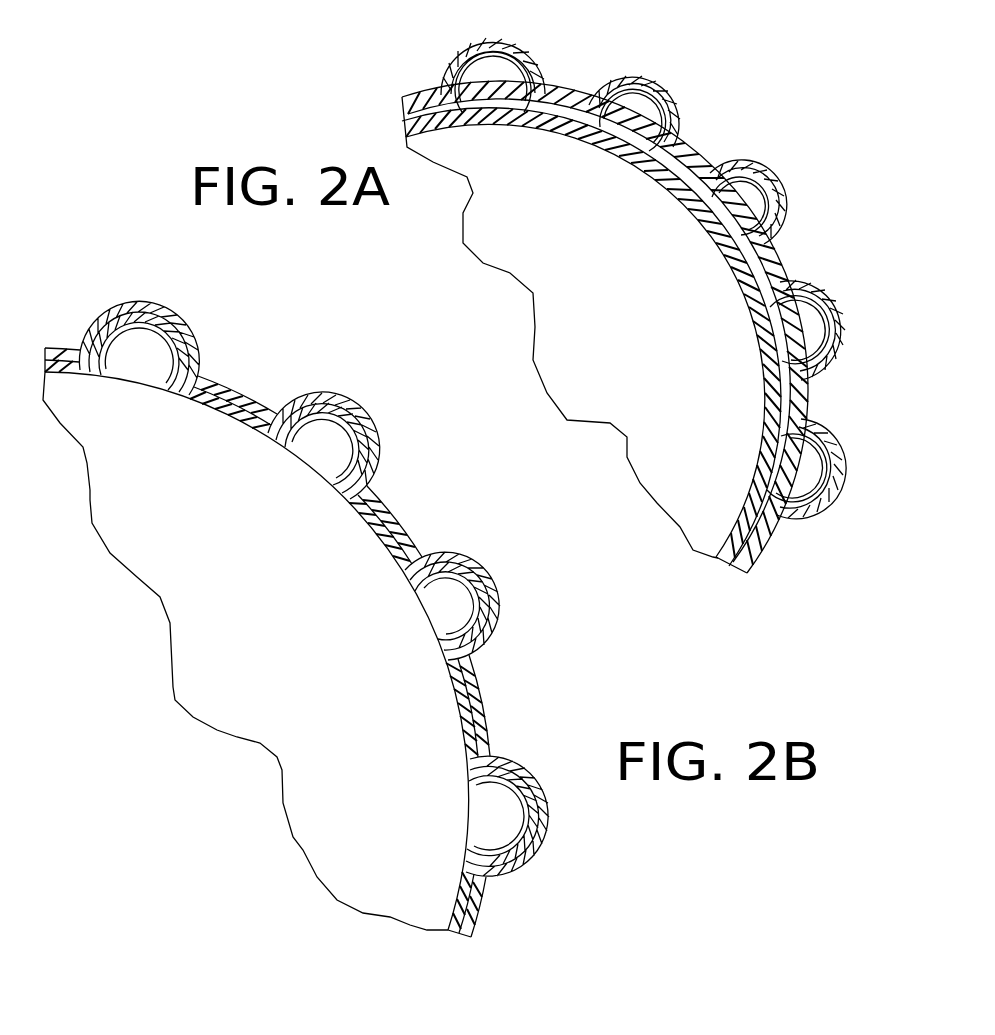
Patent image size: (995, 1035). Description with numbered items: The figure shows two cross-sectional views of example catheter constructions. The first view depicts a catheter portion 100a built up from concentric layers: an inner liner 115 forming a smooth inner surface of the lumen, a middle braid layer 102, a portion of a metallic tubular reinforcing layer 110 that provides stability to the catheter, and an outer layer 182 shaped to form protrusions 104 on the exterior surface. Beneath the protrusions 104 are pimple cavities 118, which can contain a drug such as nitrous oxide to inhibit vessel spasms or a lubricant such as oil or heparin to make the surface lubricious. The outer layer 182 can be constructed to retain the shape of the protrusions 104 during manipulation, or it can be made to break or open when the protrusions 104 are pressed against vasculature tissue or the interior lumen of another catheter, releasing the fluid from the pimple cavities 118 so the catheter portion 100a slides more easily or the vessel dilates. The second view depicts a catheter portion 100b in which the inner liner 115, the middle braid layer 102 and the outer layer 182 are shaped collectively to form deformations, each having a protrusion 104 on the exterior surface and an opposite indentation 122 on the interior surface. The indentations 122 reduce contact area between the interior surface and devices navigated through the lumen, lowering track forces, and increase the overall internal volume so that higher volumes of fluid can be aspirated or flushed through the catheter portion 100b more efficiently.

In FIG. 2A, the catheter portion 100a is at (730, 140).
In FIG. 2B, the catheter portion 100b is at (500, 671).
In FIG. 2A, the middle braid layer 102 is at (427, 98).
In FIG. 2B, the middle braid layer 102 is at (217, 392).
In FIG. 2A, the protrusions 104 is at (840, 441).
In FIG. 2B, the protrusions 104 is at (487, 562).
In FIG. 2A, the metallic tubular reinforcing layer 110 is at (770, 262).
In FIG. 2A, the inner liner 115 is at (665, 176).
In FIG. 2B, the inner liner 115 is at (248, 418).
In FIG. 2A, the pimple cavities 118 is at (803, 458).
In FIG. 2B, the indentation 122 is at (325, 467).
In FIG. 2A, the outer layer 182 is at (648, 80).
In FIG. 2B, the outer layer 182 is at (543, 830).